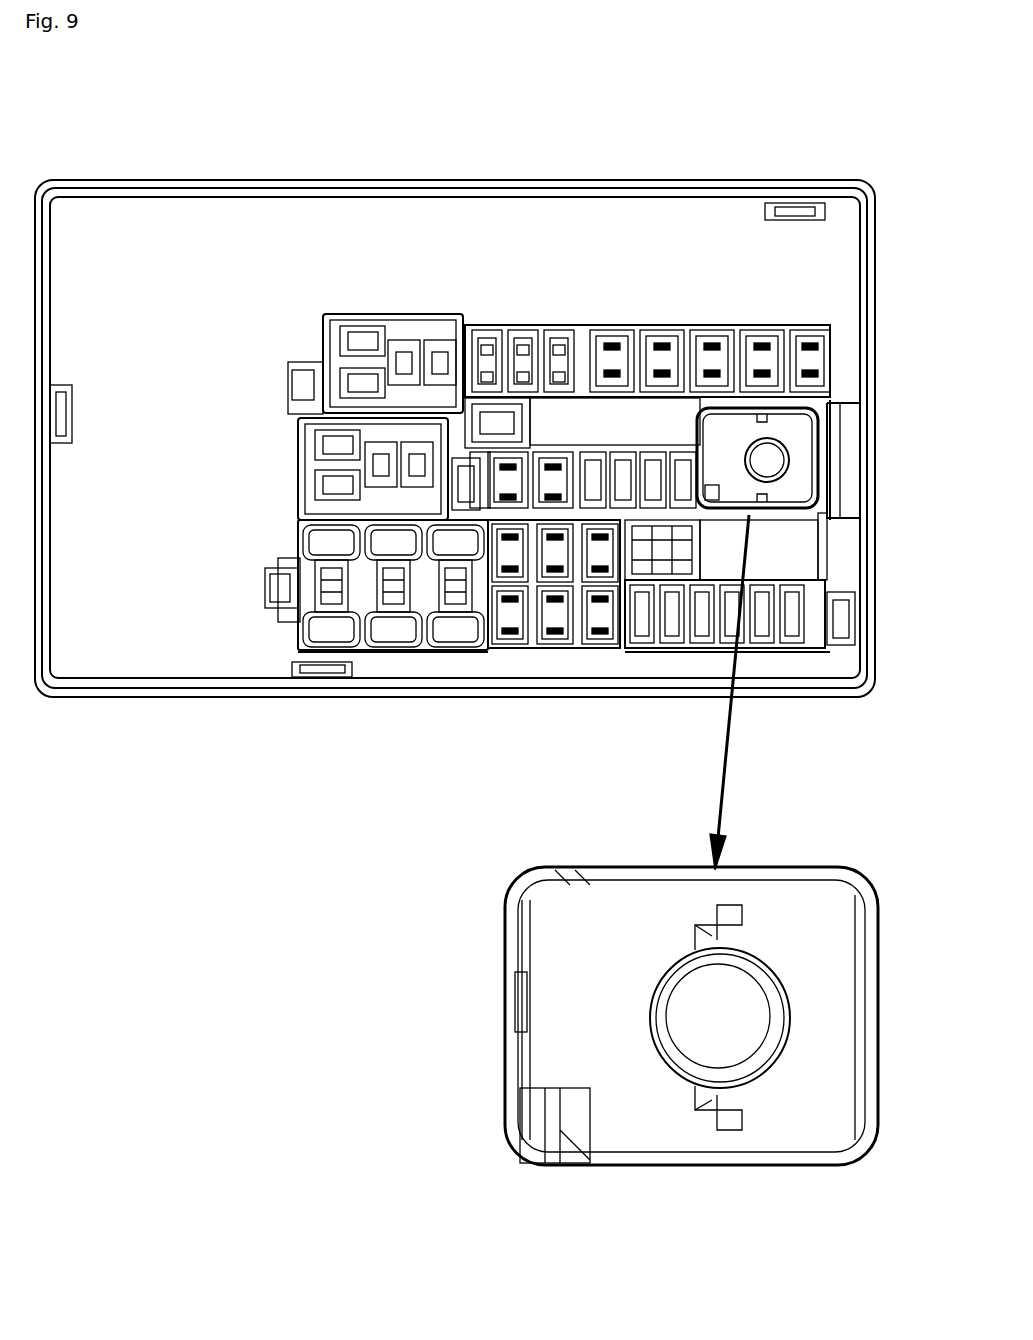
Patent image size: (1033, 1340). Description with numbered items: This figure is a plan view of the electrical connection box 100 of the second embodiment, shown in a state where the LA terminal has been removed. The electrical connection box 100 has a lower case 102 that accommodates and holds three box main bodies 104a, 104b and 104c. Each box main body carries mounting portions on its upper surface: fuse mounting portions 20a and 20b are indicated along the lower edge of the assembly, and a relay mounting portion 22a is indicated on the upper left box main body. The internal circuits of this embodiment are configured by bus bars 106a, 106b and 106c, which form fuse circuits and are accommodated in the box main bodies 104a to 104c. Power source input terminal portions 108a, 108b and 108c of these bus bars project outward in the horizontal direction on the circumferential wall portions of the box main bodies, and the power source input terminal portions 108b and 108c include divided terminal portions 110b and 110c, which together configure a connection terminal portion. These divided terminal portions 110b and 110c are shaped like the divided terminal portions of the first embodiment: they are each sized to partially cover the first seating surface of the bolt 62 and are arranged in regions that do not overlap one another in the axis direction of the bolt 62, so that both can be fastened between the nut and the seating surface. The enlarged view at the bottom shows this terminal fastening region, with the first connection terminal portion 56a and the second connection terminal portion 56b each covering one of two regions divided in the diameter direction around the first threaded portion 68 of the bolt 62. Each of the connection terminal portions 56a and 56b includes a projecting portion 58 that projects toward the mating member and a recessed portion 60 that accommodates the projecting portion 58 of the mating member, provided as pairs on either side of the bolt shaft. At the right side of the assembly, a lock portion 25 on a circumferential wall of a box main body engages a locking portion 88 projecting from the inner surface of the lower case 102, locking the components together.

The electrical connection box 100 is at (470, 100).
The lower case 102 is at (663, 160).
The relay mounting portion 22a is at (380, 300).
The box main body 104a is at (242, 562).
The box main body 104b is at (268, 468).
The box main body 104c is at (555, 300).
The bus bar 106a is at (694, 645).
The bus bar 106b is at (637, 830).
The bus bar 106c is at (651, 316).
The power source input terminal portion 108a is at (775, 570).
The power source input terminal portion 108b is at (637, 830).
The power source input terminal portion 108c is at (651, 316).
The divided terminal portion 110b is at (637, 830).
The divided terminal portion 110c is at (800, 400).
The first connection terminal portion 56a is at (615, 645).
The second connection terminal portion 56b is at (820, 1015).
The bolt 62 is at (730, 432).
The first threaded portion 68 is at (762, 458).
The projecting portion 58 is at (692, 880).
The recessed portion 60 is at (694, 935).
The locking portion 88 is at (870, 632).
The lock portion 25 is at (838, 660).
The fuse mounting portion 20a is at (397, 662).
The fuse mounting portion 20b is at (686, 662).